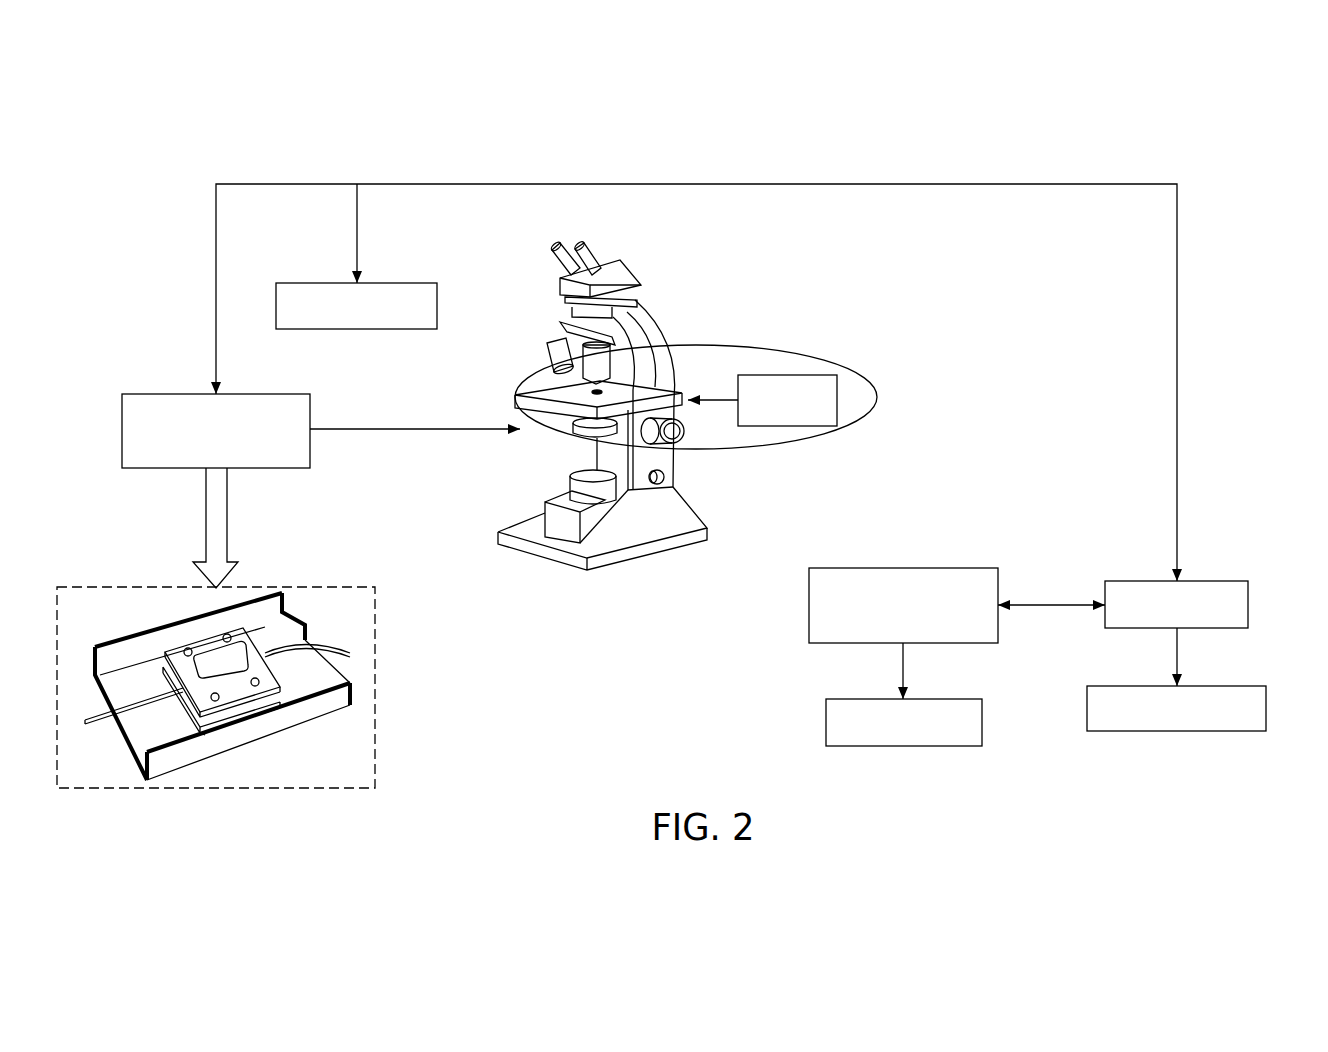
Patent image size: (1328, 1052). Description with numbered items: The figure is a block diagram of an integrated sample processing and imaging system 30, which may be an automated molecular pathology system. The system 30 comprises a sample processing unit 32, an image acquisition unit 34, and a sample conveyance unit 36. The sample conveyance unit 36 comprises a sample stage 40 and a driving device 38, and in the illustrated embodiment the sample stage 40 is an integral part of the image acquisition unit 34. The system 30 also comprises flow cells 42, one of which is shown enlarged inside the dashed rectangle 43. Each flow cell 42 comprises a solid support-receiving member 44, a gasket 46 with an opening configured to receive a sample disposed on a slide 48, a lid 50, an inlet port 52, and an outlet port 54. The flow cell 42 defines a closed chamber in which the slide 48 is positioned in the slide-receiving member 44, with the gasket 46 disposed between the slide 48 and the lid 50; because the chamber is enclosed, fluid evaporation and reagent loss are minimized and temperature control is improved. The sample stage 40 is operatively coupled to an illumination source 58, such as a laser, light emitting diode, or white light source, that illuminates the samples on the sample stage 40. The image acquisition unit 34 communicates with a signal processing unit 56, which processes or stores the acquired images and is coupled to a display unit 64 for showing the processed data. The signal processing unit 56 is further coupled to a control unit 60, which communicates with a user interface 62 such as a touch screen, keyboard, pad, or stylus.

The integrated sample processing and imaging system 30 is at (1228, 86).
The sample processing unit 32 is at (276, 394).
The image acquisition unit 34 is at (630, 278).
The sample conveyance unit 36 is at (757, 347).
The driving device 38 is at (820, 375).
The sample stage 40 is at (547, 392).
The flow cell 42 is at (122, 634).
The dashed rectangle 43 is at (344, 587).
The solid support-receiving member 44 is at (253, 722).
The gasket 46 is at (282, 676).
The slide 48 is at (213, 663).
The lid 50 is at (205, 703).
The inlet port 52 is at (183, 703).
The outlet port 54 is at (343, 651).
The signal processing unit 56 is at (957, 568).
The illumination source 58 is at (417, 283).
The control unit 60 is at (1217, 581).
The user interface 62 is at (1268, 708).
The display unit 64 is at (953, 699).